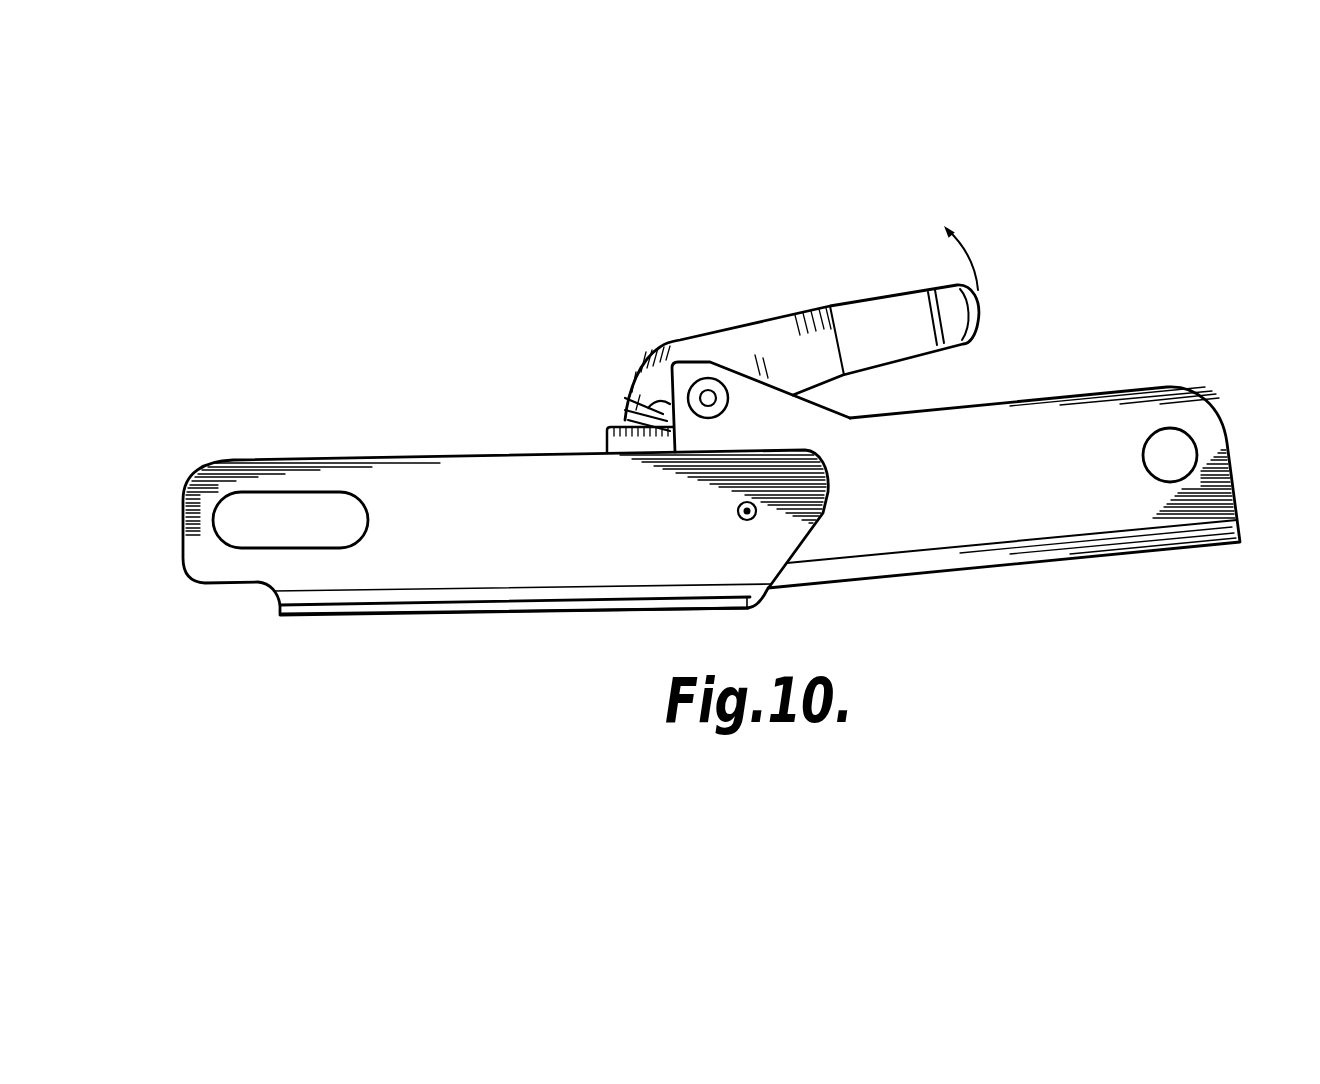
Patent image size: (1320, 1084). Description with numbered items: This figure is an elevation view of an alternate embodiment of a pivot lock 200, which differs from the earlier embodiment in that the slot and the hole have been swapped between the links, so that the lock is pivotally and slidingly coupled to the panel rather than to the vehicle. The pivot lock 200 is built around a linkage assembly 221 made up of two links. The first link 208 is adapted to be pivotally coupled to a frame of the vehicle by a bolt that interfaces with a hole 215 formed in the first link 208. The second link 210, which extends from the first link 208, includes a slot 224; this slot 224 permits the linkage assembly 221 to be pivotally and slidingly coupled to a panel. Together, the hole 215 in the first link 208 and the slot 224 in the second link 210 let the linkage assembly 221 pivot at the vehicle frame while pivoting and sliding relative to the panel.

The pivot lock 200 is at (734, 459).
The first link 208 is at (1202, 396).
The second link 210 is at (390, 455).
The hole 215 is at (1187, 455).
The linkage assembly 221 is at (527, 638).
The slot 224 is at (240, 548).